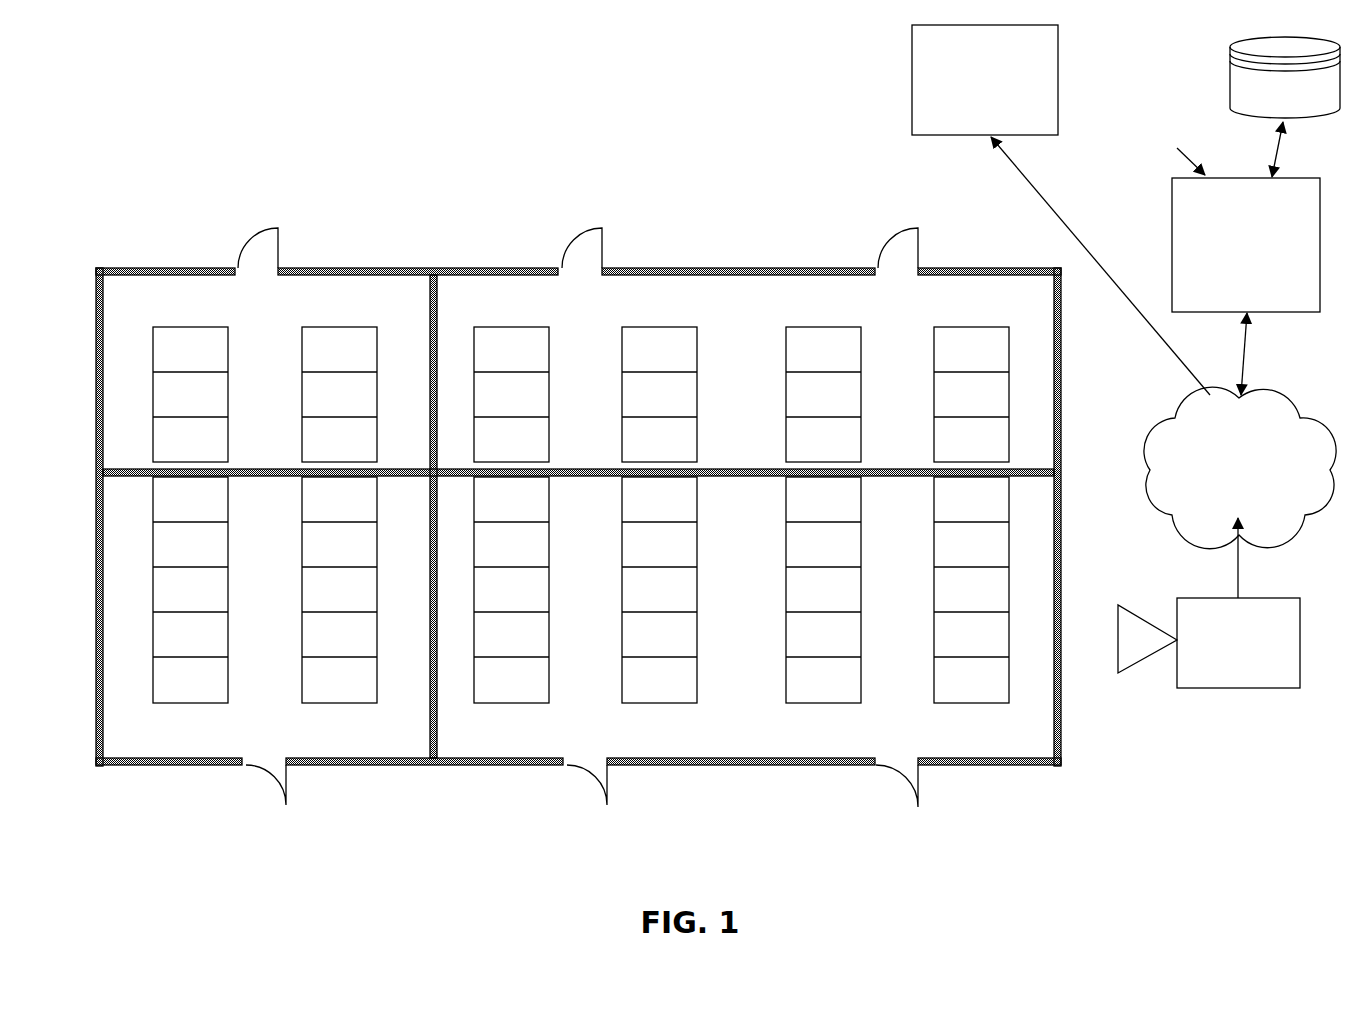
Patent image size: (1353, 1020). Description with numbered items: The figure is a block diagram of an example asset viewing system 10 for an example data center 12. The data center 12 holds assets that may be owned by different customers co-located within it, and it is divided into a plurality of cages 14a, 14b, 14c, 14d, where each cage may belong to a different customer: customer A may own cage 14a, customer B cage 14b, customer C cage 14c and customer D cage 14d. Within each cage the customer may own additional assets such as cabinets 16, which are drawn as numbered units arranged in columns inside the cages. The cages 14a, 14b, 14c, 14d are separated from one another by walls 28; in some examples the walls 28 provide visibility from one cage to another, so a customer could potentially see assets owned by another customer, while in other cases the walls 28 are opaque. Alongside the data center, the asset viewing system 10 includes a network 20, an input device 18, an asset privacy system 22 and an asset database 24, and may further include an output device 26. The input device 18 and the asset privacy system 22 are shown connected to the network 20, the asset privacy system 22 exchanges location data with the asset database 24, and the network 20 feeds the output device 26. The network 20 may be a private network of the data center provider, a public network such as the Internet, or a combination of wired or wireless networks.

The asset viewing system 10 is at (693, 58).
The data center 12 is at (213, 220).
The cage 14a is at (350, 285).
The cage 14b is at (468, 285).
The cage 14c is at (376, 748).
The cage 14d is at (495, 750).
The cabinet 16 is at (543, 352).
The input device 18 is at (1209, 603).
The network 20 is at (1240, 468).
The asset privacy system 22 is at (1246, 245).
The asset database 24 is at (1285, 77).
The output device 26 is at (985, 80).
The wall 28 is at (430, 300).